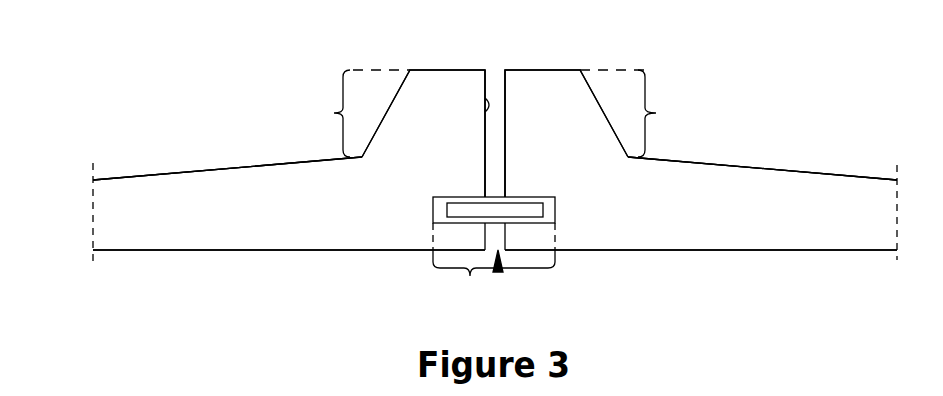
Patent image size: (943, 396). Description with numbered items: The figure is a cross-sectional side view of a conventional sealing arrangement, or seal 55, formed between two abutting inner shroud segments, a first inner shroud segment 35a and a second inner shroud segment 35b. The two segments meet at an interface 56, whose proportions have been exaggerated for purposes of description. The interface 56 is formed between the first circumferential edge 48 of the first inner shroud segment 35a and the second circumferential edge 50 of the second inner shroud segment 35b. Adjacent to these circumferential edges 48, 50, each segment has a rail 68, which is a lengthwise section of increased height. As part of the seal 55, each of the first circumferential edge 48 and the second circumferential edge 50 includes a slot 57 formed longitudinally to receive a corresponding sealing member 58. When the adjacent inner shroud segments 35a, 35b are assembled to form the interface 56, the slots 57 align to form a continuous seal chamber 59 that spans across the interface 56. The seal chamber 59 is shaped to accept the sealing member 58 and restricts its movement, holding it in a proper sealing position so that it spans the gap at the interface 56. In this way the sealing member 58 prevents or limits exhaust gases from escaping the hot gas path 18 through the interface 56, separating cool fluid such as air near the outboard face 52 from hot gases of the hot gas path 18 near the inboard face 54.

The hot gas path 18 is at (702, 305).
The first inner shroud segment 35a is at (730, 225).
The second inner shroud segment 35b is at (310, 227).
The first circumferential edge 48 is at (493, 151).
The second circumferential edge 50 is at (485, 105).
The outboard face 52 is at (268, 165).
The inboard face 54 is at (287, 250).
The seal 55 is at (498, 270).
The interface 56 is at (503, 125).
The slot 57 is at (438, 210).
The sealing member 58 is at (505, 209).
The seal chamber 59 is at (494, 265).
The rail 68 is at (496, 113).